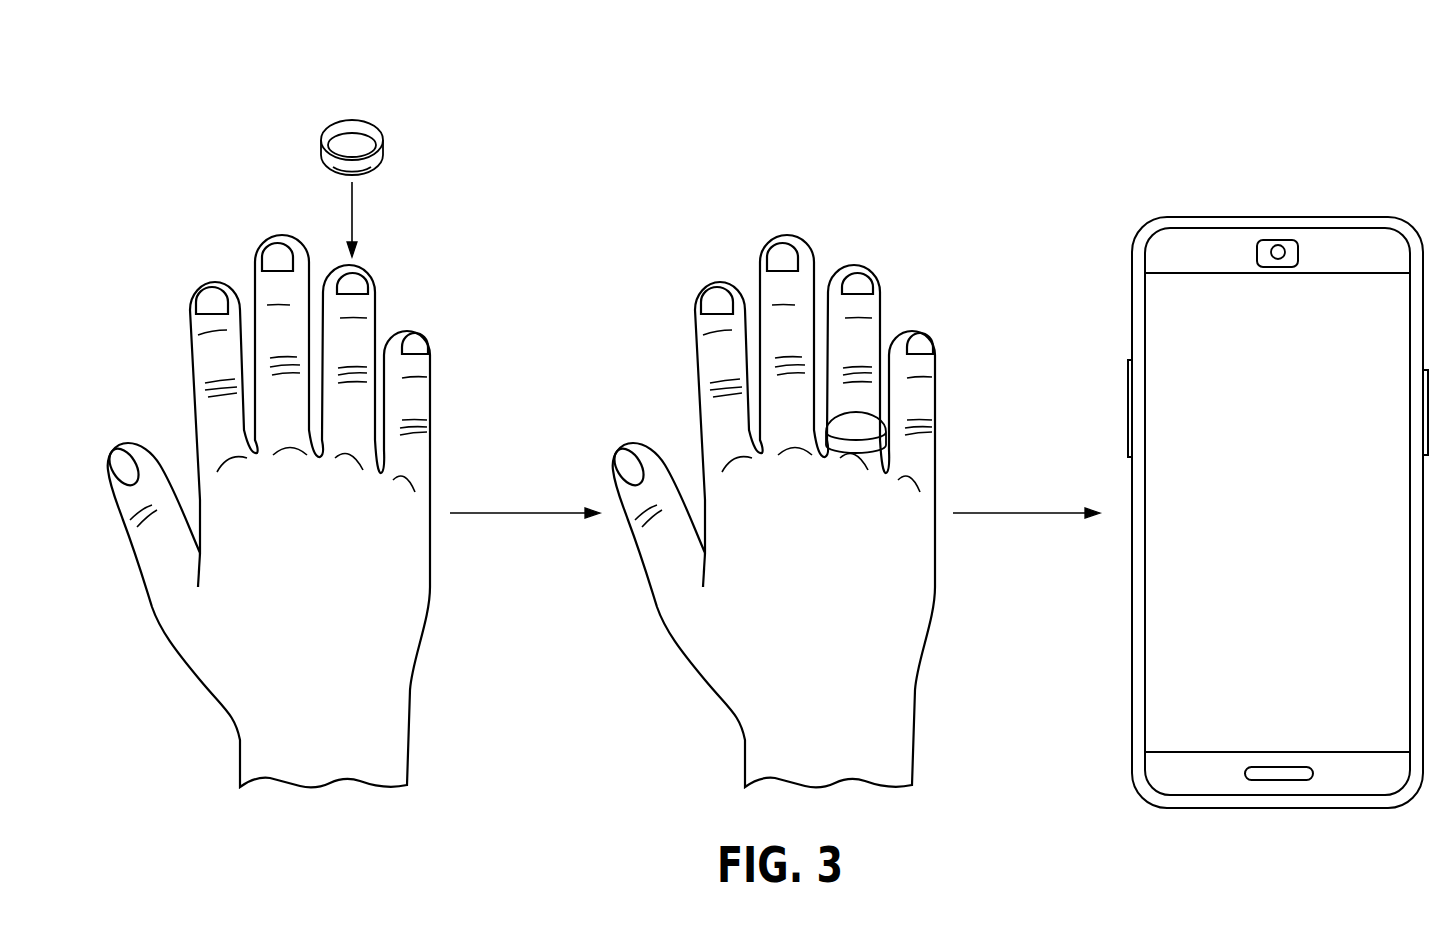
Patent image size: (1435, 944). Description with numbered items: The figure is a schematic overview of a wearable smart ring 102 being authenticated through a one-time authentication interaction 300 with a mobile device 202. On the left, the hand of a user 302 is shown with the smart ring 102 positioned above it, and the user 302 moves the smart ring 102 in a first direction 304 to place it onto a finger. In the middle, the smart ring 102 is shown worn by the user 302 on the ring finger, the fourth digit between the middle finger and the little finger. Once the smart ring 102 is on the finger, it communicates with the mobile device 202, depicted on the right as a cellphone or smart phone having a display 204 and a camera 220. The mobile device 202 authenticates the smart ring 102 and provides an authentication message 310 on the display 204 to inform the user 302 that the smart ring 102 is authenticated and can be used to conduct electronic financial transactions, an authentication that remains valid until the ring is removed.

The smart ring 102 is at (350, 120).
The mobile device 202 is at (1208, 215).
The display 204 is at (1343, 310).
The camera 220 is at (1277, 240).
The one-time authentication interaction 300 is at (995, 140).
The user 302 is at (207, 281).
The first direction 304 is at (353, 210).
The authentication message 310 is at (1268, 458).